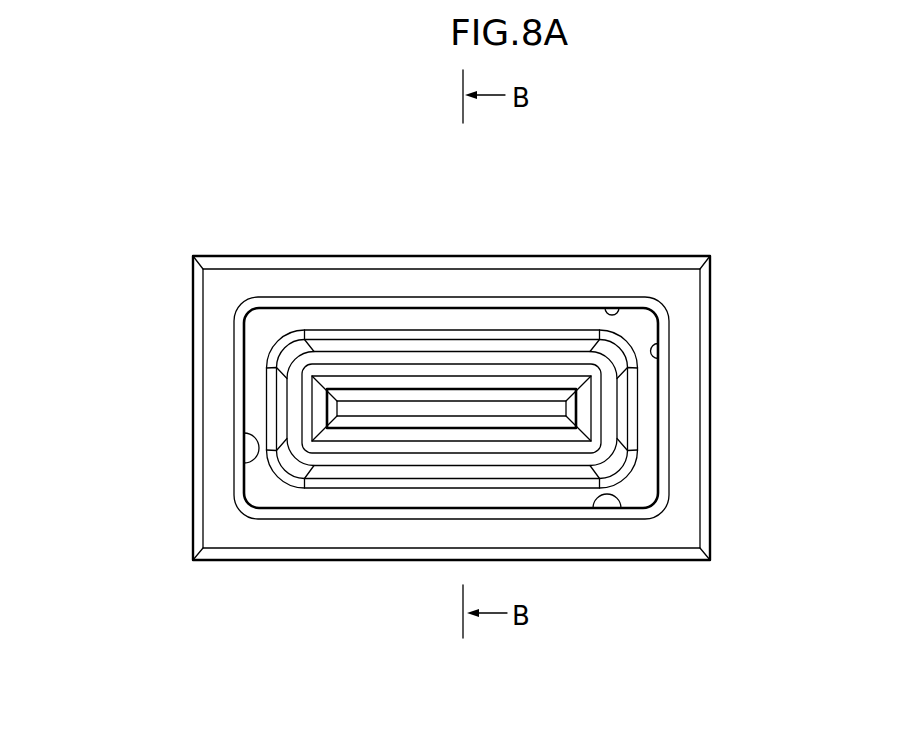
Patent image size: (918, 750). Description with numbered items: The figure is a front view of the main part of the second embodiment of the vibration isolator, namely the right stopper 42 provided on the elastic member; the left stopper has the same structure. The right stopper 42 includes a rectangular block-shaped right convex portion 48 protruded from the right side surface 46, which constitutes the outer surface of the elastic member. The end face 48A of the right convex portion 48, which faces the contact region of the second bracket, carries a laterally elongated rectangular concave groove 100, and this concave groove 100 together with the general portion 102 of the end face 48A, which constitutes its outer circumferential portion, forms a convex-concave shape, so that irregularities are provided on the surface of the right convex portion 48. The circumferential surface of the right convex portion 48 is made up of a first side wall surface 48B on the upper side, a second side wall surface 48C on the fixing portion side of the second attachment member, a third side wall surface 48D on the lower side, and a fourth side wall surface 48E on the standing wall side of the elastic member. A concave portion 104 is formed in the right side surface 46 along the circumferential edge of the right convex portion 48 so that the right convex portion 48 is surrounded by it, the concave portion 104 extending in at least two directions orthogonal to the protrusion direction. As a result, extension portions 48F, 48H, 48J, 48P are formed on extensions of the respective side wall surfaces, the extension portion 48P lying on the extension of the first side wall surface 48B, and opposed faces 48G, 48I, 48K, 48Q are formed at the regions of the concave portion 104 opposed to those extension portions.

The right stopper 42 is at (718, 148).
The right side surface 46 is at (217, 432).
The right convex portion 48 is at (298, 490).
The end face 48A is at (428, 357).
The first side wall surface 48B is at (360, 337).
The extension portion 48P is at (452, 280).
The second side wall surface 48C is at (633, 408).
The extension portion 48F is at (718, 413).
The third side wall surface 48D is at (540, 483).
The extension portion 48H is at (452, 563).
The fourth side wall surface 48E is at (270, 398).
The extension portion 48J is at (183, 409).
The notch 48G is at (660, 357).
The opposed face 48I is at (613, 510).
The opposed face 48K is at (253, 463).
The opposed face 48Q is at (623, 308).
The concave groove 100 is at (527, 402).
The general portion 102 is at (482, 360).
The concave portion 104 is at (392, 500).